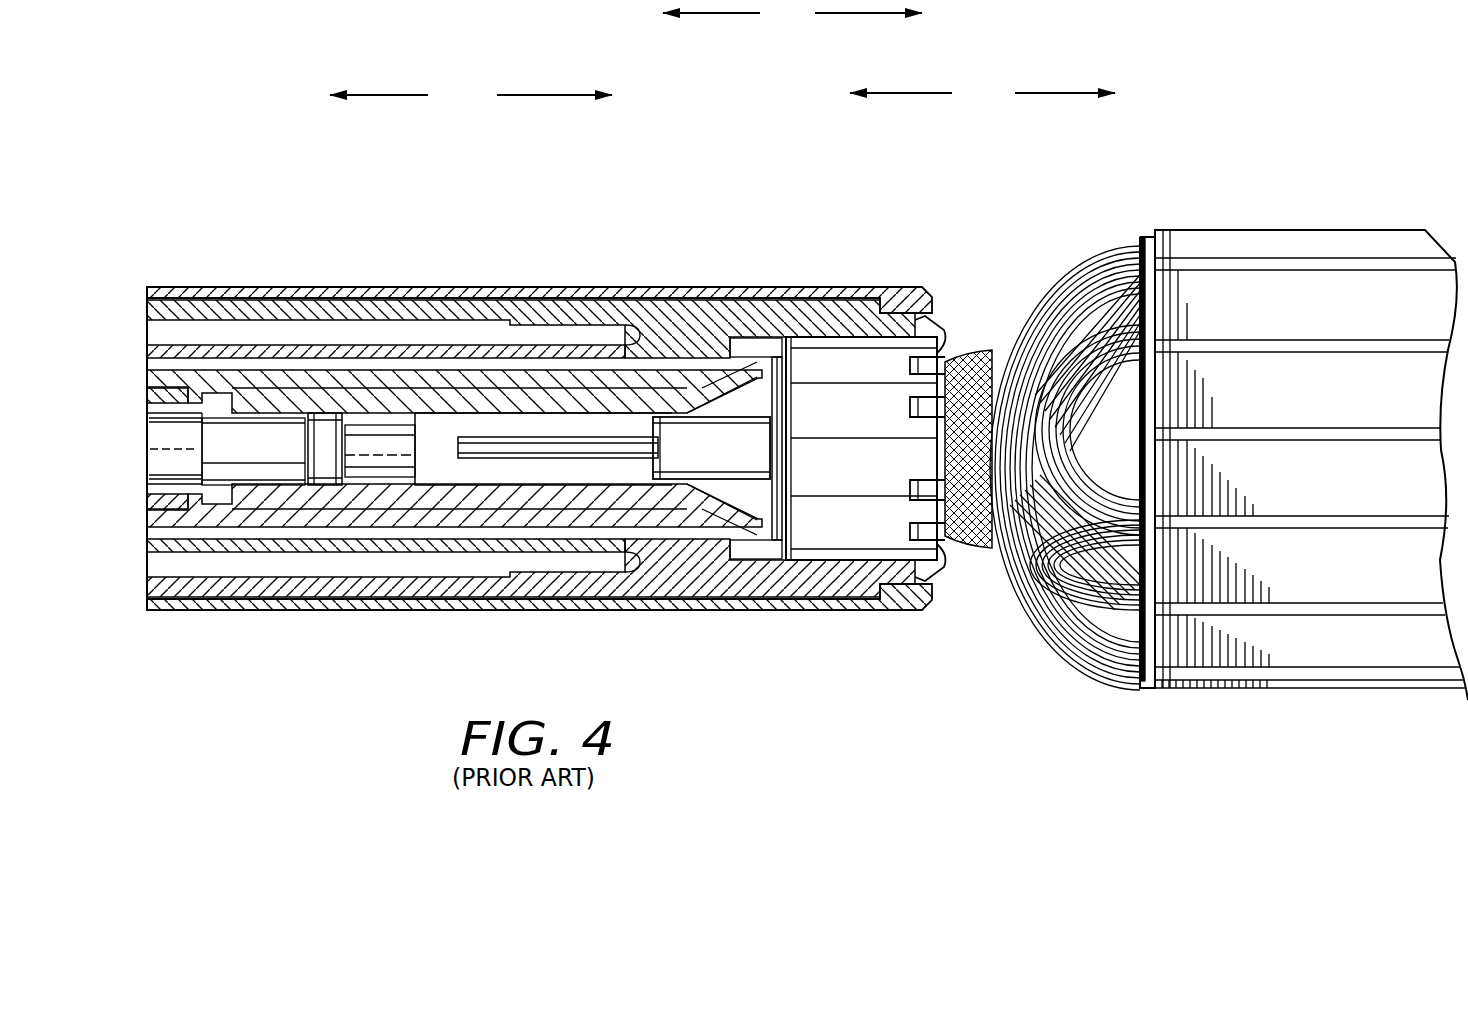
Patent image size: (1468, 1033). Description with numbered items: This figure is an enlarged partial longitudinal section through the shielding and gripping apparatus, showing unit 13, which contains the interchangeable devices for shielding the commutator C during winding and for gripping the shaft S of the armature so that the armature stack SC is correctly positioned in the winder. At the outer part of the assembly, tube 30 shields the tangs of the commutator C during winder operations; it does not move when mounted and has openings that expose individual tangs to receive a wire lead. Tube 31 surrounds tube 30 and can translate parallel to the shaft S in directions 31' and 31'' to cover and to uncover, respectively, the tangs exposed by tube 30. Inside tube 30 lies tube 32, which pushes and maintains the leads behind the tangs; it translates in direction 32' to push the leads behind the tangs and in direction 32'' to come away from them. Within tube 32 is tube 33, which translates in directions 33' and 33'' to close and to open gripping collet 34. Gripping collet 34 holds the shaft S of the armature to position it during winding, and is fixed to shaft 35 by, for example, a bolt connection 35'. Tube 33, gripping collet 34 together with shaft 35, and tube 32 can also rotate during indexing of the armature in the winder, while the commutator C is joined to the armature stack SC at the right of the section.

The unit 13 is at (402, 615).
The tube 30 is at (862, 304).
The tube 31 is at (546, 418).
The direction 31' is at (867, 42).
The direction 31'' is at (711, 42).
The tube 32 is at (407, 487).
The direction 32' is at (1065, 125).
The direction 32'' is at (901, 125).
The tube 33 is at (454, 387).
The direction 33' is at (554, 60).
The direction 33'' is at (380, 60).
The gripping collet 34 is at (747, 505).
The shaft 35 is at (187, 374).
The bolt connection 35' is at (347, 362).
The shaft S is at (707, 433).
The commutator C is at (842, 527).
The armature stack SC is at (1210, 240).